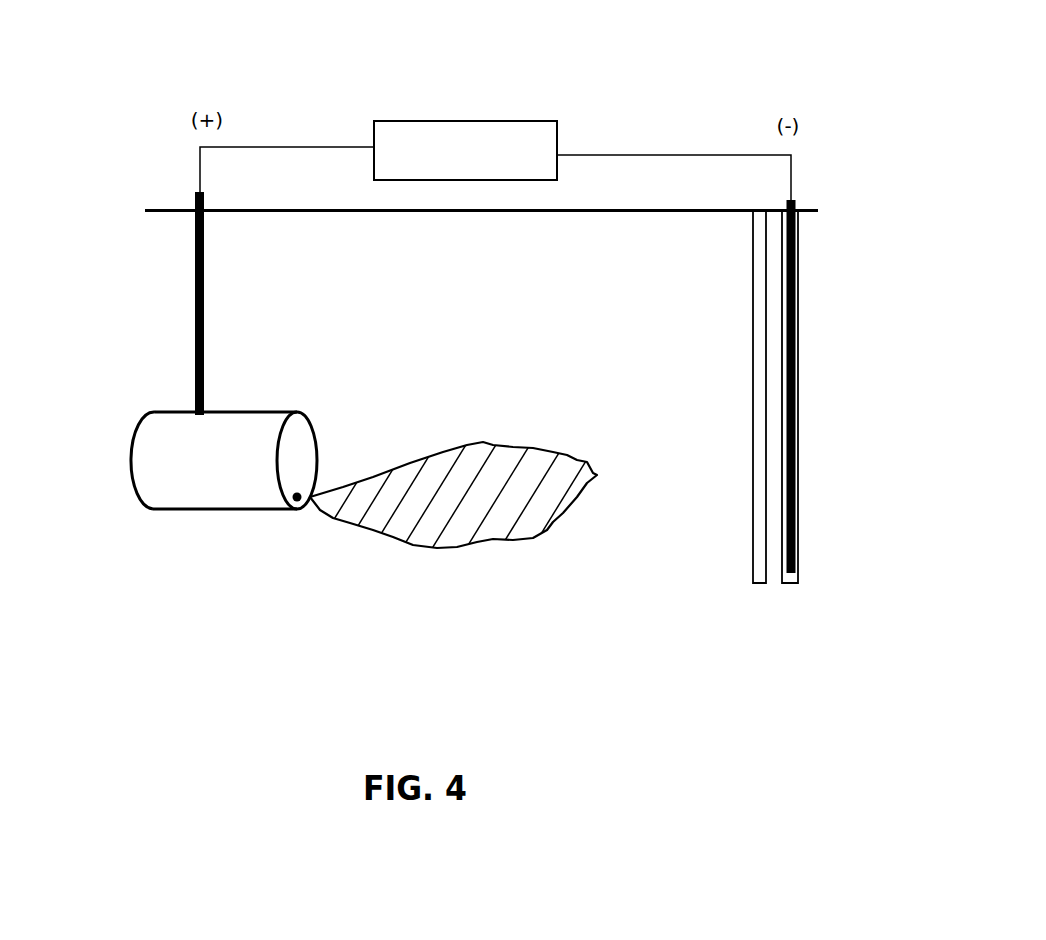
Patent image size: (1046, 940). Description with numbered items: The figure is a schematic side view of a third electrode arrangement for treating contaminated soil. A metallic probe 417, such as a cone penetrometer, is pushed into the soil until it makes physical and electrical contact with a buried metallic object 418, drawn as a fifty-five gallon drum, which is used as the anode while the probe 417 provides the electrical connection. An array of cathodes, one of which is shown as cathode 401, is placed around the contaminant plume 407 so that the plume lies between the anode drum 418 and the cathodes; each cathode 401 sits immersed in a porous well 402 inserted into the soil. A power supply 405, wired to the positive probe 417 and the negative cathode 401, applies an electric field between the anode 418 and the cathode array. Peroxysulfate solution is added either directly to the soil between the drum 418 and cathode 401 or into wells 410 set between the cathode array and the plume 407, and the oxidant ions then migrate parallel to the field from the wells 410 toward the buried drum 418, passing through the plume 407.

The cathode 401 is at (795, 206).
The porous well 402 is at (798, 448).
The power supply 405 is at (466, 121).
The contaminant plume 407 is at (507, 540).
The well 410 is at (752, 362).
The metallic probe 417 is at (195, 311).
The buried metallic object 418 is at (155, 410).